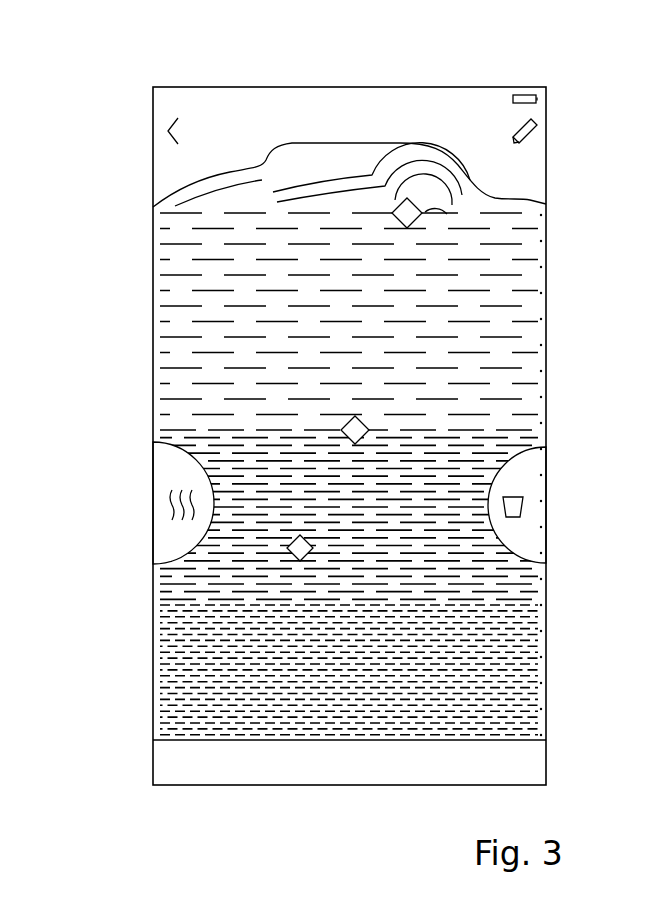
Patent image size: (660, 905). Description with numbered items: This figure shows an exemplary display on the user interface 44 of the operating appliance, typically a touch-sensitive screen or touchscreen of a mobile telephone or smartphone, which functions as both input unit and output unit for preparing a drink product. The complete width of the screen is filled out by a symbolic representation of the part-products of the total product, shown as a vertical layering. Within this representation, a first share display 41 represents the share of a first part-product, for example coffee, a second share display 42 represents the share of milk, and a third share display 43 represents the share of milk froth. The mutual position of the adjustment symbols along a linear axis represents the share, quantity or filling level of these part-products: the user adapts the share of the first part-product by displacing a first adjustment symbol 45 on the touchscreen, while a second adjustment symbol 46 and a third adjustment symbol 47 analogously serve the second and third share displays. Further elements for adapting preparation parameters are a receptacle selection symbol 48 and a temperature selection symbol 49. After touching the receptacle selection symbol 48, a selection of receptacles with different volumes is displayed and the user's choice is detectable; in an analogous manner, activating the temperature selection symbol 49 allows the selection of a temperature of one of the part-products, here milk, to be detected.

The user interface 44 is at (103, 70).
The first share display 41 is at (490, 663).
The second share display 42 is at (442, 478).
The third share display 43 is at (453, 332).
The first adjustment symbol 45 is at (287, 552).
The second adjustment symbol 46 is at (341, 430).
The third adjustment symbol 47 is at (392, 216).
The receptacle selection symbol 48 is at (537, 511).
The temperature selection symbol 49 is at (158, 502).